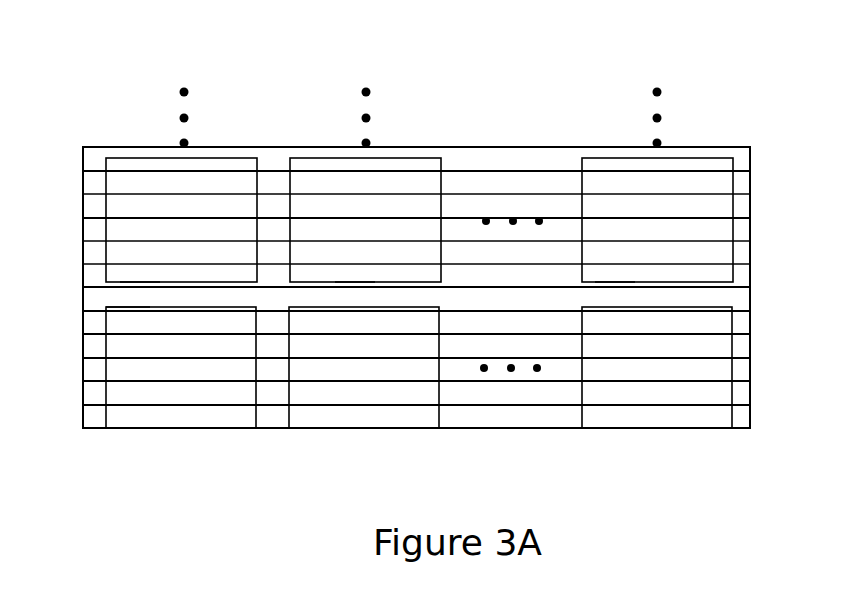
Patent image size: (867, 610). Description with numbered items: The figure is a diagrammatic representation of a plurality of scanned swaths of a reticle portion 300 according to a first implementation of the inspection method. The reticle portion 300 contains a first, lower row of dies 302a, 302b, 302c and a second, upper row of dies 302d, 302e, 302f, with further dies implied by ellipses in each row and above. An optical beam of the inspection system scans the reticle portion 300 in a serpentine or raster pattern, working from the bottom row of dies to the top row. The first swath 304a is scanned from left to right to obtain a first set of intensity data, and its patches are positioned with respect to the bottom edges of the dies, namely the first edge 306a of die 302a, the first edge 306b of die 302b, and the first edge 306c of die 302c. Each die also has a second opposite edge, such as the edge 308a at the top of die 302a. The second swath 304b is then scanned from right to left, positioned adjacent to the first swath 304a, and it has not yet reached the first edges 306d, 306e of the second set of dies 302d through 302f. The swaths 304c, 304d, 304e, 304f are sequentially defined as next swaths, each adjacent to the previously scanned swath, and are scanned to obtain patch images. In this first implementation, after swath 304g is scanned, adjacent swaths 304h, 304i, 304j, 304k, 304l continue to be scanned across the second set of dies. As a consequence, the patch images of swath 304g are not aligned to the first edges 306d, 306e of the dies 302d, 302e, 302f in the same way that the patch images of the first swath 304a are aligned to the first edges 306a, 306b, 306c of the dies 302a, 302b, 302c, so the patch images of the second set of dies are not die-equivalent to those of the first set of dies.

The reticle portion 300 is at (105, 128).
The die 302a is at (199, 376).
The die 302b is at (382, 376).
The die 302c is at (676, 376).
The die 302d is at (200, 228).
The die 302e is at (384, 228).
The die 302f is at (675, 228).
The first swath 304a is at (450, 418).
The second swath 304b is at (450, 393).
The swath 304c is at (450, 369).
The swath 304d is at (450, 346).
The swath 304e is at (450, 322).
The swath 304f is at (448, 298).
The swath 304g is at (450, 274).
The swath 304h is at (450, 250).
The swath 304i is at (446, 227).
The swath 304j is at (447, 204).
The swath 304k is at (450, 180).
The swath 304l is at (446, 158).
The first edge 306a is at (179, 432).
The first edge 306b is at (364, 432).
The first edge 306c is at (649, 432).
The first edge 306d is at (142, 277).
The first edge 306e is at (355, 280).
The second opposite edge 308a is at (125, 305).